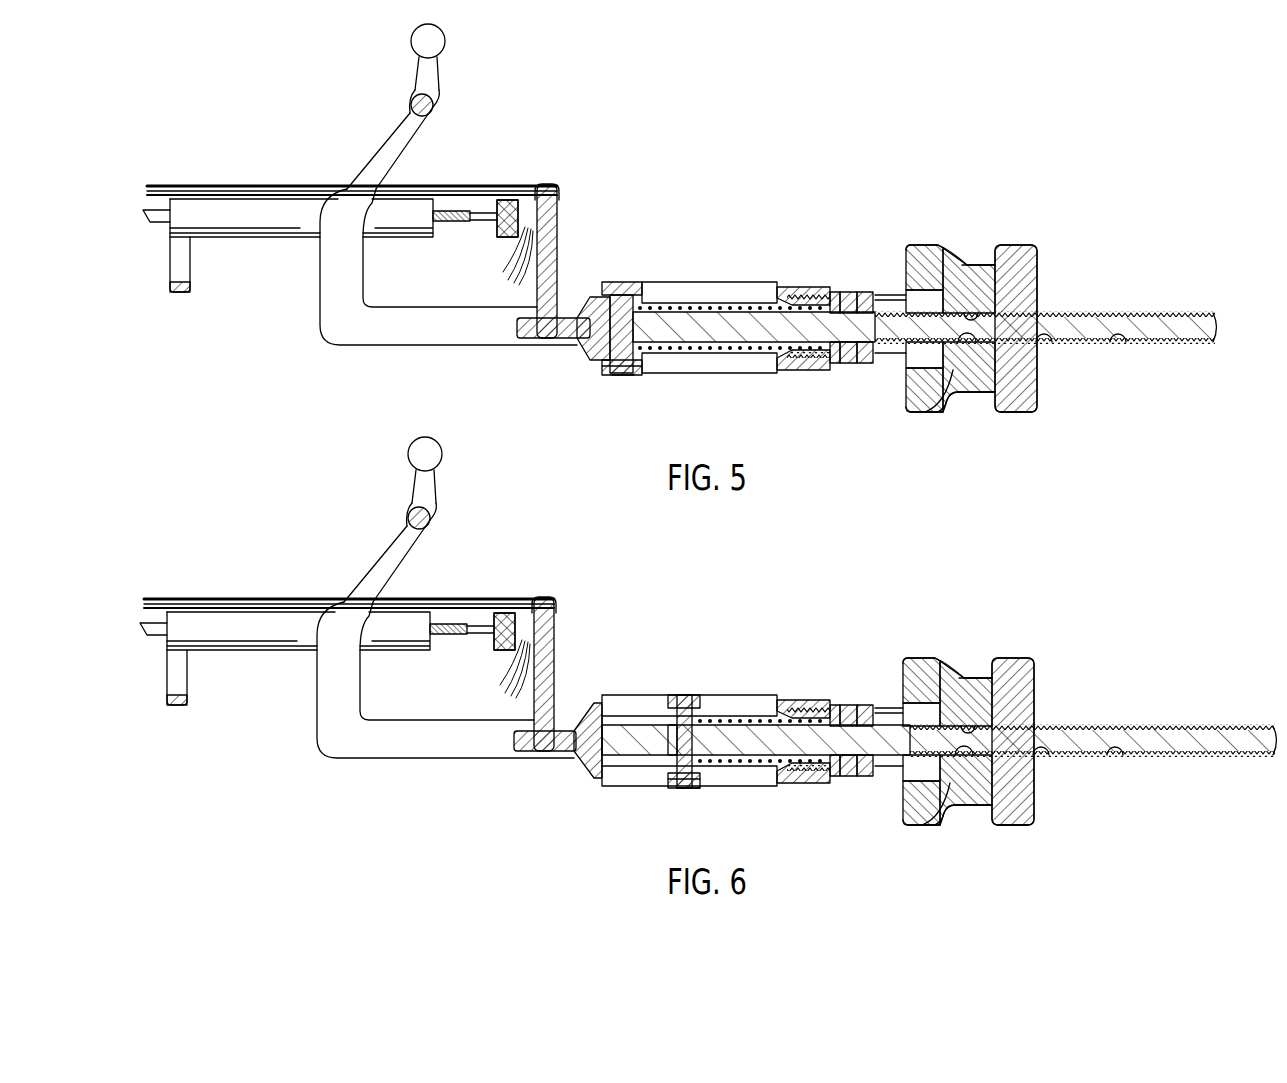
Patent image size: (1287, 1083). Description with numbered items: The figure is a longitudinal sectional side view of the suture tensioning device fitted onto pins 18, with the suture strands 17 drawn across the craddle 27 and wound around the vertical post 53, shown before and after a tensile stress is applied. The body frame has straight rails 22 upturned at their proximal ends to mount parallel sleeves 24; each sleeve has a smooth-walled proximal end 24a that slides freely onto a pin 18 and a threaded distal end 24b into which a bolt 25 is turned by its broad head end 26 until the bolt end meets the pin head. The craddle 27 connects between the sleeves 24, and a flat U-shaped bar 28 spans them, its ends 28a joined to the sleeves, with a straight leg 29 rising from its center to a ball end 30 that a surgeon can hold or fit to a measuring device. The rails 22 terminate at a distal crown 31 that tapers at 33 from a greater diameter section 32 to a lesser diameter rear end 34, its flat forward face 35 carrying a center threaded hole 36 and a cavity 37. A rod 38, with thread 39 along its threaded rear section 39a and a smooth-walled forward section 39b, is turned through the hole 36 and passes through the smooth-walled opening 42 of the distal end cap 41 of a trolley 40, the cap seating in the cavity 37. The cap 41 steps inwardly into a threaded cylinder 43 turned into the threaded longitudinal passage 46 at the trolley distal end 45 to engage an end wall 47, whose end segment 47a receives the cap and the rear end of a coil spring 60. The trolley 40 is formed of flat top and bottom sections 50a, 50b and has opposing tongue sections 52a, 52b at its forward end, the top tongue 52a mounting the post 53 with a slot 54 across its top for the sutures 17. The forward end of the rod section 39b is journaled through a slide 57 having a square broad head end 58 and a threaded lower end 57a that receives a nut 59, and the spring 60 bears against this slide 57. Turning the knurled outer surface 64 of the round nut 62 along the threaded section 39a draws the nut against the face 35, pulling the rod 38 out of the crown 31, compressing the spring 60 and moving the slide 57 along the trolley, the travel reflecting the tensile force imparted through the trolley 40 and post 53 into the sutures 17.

In FIG. 5, the sutures 17 is at (180, 196).
In FIG. 6, the sutures 17 is at (349, 620).
In FIG. 5, the pins 18 is at (150, 214).
In FIG. 6, the pins 18 is at (126, 615).
In FIG. 5, the rails 22 is at (408, 322).
In FIG. 6, the rails 22 is at (610, 729).
In FIG. 5, the sleeves 24 is at (290, 208).
In FIG. 6, the sleeves 24 is at (298, 593).
In FIG. 5, the proximal end 24a is at (168, 230).
In FIG. 6, the proximal end 24a is at (138, 658).
In FIG. 5, the distal end 24b is at (438, 200).
In FIG. 6, the distal end 24b is at (437, 594).
In FIG. 5, the bolt 25 is at (466, 210).
In FIG. 6, the bolt 25 is at (476, 578).
In FIG. 5, the broad head ends 26 is at (507, 200).
In FIG. 6, the broad head ends 26 is at (501, 563).
In FIG. 5, the craddle 27 is at (169, 290).
In FIG. 6, the craddle 27 is at (138, 720).
In FIG. 5, the U-shaped bar 28 is at (414, 104).
In FIG. 6, the U-shaped bar 28 is at (362, 510).
In FIG. 5, the ends 28a is at (322, 232).
In FIG. 6, the ends 28a is at (340, 613).
In FIG. 5, the straight leg 29 is at (427, 62).
In FIG. 6, the straight leg 29 is at (370, 482).
In FIG. 5, the ball end 30 is at (420, 45).
In FIG. 6, the ball end 30 is at (392, 454).
In FIG. 5, the crown 31 is at (960, 236).
In FIG. 6, the crown 31 is at (968, 692).
In FIG. 5, the greater diameter section 32 is at (908, 244).
In FIG. 6, the greater diameter section 32 is at (921, 693).
In FIG. 5, the taper 33 is at (963, 262).
In FIG. 6, the taper 33 is at (988, 701).
In FIG. 5, the lesser diameter rear end section 34 is at (1000, 264).
In FIG. 6, the lesser diameter rear end section 34 is at (1020, 647).
In FIG. 5, the flat forward face 35 is at (985, 396).
In FIG. 6, the flat forward face 35 is at (980, 843).
In FIG. 5, the center threaded hole 36 is at (950, 400).
In FIG. 6, the center threaded hole 36 is at (935, 835).
In FIG. 5, the cavity 37 is at (908, 413).
In FIG. 6, the cavity 37 is at (899, 856).
In FIG. 5, the rod 38 is at (1130, 314).
In FIG. 6, the rod 38 is at (1093, 713).
In FIG. 5, the thread groove 39 is at (1056, 344).
In FIG. 6, the thread groove 39 is at (1024, 778).
In FIG. 5, the threaded rear section 39a is at (1124, 344).
In FIG. 6, the threaded rear section 39a is at (1137, 788).
In FIG. 5, the rod forward section 39b is at (620, 282).
In FIG. 6, the rod forward section 39b is at (651, 741).
In FIG. 5, the trolley 40 is at (697, 243).
In FIG. 6, the trolley 40 is at (761, 674).
In FIG. 5, the distal end cap 41 is at (860, 292).
In FIG. 6, the distal end cap 41 is at (859, 686).
In FIG. 5, the smooth walled opening 42 is at (855, 296).
In FIG. 6, the smooth walled opening 42 is at (875, 700).
In FIG. 5, the threaded cylinder 43 is at (826, 294).
In FIG. 6, the threaded cylinder 43 is at (843, 686).
In FIG. 5, the distal end 45 is at (795, 292).
In FIG. 6, the distal end 45 is at (801, 642).
In FIG. 5, the threaded longitudinal passage 46 is at (787, 296).
In FIG. 6, the threaded longitudinal passage 46 is at (790, 684).
In FIG. 5, the end wall 47 is at (786, 297).
In FIG. 6, the end wall 47 is at (783, 676).
In FIG. 5, the end segment 47a is at (780, 300).
In FIG. 6, the end segment 47a is at (779, 725).
In FIG. 5, the top section 50a is at (648, 282).
In FIG. 6, the top section 50a is at (689, 673).
In FIG. 5, the bottom section 50b is at (812, 374).
In FIG. 6, the bottom section 50b is at (714, 792).
In FIG. 5, the top tongue section 52a is at (585, 316).
In FIG. 6, the top tongue section 52a is at (557, 694).
In FIG. 5, the tongue section 52b is at (588, 345).
In FIG. 6, the tongue section 52b is at (553, 751).
In FIG. 5, the vertical post 53 is at (562, 198).
In FIG. 6, the vertical post 53 is at (563, 577).
In FIG. 5, the slot 54 is at (547, 184).
In FIG. 6, the slot 54 is at (542, 637).
In FIG. 5, the slide 57 is at (650, 376).
In FIG. 6, the slide 57 is at (708, 803).
In FIG. 5, the lower slide end 57a is at (625, 376).
In FIG. 6, the lower slide end 57a is at (625, 828).
In FIG. 5, the square broad head end 58 is at (610, 283).
In FIG. 6, the square broad head end 58 is at (684, 650).
In FIG. 5, the nut 59 is at (618, 372).
In FIG. 6, the nut 59 is at (628, 807).
In FIG. 5, the coil spring 60 is at (762, 344).
In FIG. 6, the coil spring 60 is at (756, 779).
In FIG. 5, the round nut 62 is at (1040, 270).
In FIG. 6, the round nut 62 is at (1059, 732).
In FIG. 5, the knurled outer surface 64 is at (1030, 414).
In FIG. 6, the knurled outer surface 64 is at (1047, 853).